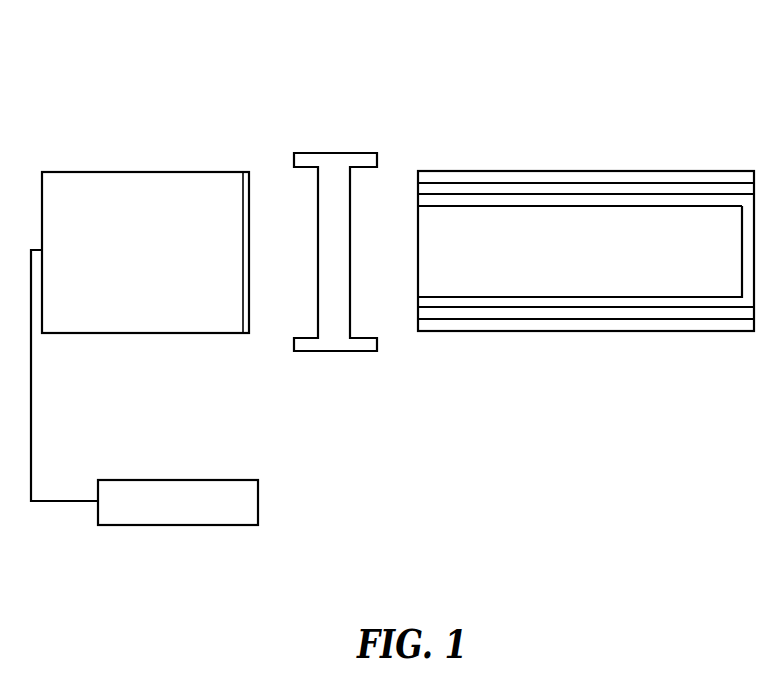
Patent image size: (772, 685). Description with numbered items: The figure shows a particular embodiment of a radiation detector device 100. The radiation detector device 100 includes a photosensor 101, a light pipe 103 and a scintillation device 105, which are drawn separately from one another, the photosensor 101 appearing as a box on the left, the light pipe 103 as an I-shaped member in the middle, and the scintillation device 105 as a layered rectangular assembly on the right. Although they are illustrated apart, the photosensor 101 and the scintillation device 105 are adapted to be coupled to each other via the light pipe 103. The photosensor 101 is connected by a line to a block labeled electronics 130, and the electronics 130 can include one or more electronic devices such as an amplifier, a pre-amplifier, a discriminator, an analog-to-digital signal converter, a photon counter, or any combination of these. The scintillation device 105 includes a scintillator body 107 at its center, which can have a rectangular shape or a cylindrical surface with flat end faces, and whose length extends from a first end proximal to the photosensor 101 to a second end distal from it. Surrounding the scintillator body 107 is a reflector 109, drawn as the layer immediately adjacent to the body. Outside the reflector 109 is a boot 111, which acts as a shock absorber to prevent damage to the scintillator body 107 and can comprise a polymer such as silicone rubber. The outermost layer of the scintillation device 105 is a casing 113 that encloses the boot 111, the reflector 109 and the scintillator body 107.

The radiation detector device 100 is at (103, 93).
The photosensor 101 is at (128, 266).
The light pipe 103 is at (340, 351).
The scintillation device 105 is at (586, 262).
The scintillator body 107 is at (550, 266).
The reflector 109 is at (630, 202).
The boot 111 is at (562, 188).
The casing 113 is at (505, 171).
The electronics 130 is at (178, 480).